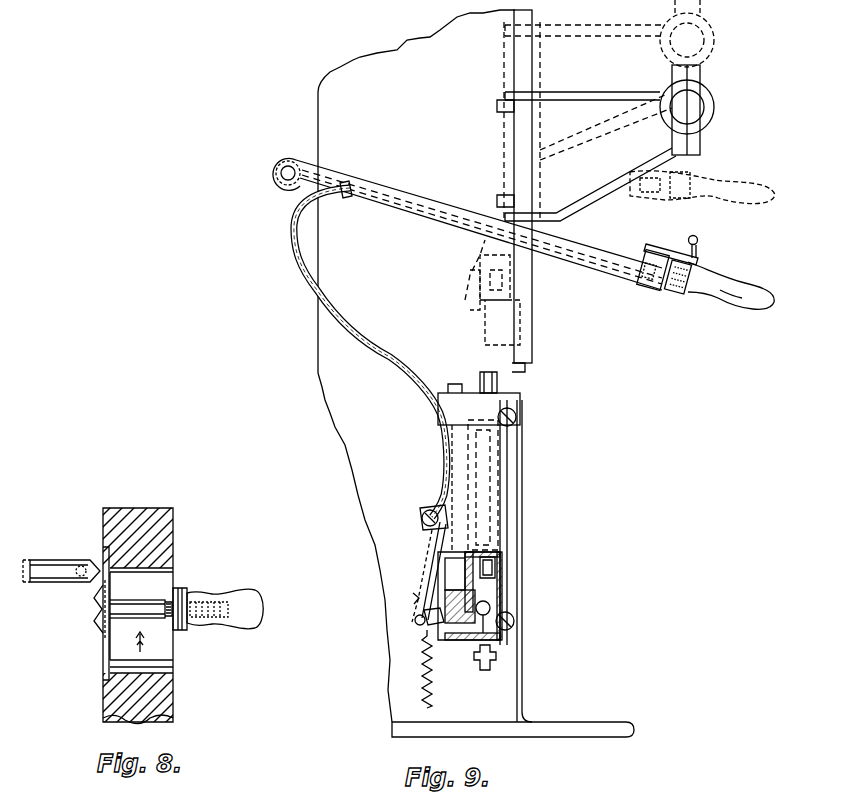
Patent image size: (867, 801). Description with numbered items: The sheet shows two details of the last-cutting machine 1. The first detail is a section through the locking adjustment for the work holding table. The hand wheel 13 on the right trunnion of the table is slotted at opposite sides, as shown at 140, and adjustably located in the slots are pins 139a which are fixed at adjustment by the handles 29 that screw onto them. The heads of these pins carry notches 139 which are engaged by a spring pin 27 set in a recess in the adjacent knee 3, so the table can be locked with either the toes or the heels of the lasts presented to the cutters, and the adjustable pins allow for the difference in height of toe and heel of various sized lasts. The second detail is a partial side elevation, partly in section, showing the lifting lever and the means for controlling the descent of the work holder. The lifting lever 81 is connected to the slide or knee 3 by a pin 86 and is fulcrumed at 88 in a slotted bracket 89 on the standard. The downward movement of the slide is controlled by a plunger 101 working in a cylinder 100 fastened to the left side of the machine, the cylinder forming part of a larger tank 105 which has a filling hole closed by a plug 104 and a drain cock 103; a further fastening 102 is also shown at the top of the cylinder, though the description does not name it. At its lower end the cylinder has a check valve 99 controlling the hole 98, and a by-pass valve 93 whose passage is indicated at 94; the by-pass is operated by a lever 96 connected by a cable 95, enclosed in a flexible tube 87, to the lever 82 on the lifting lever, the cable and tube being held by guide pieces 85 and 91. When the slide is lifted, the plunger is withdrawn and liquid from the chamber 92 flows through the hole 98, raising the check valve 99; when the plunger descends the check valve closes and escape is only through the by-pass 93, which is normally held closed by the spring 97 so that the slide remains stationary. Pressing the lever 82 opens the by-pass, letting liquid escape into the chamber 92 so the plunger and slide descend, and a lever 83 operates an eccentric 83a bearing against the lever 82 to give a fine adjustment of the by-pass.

In FIG. 9, the machine body 1 is at (332, 372).
In FIG. 9, the slide or knee 3 is at (575, 112).
In FIG. 8, the hand wheel 13 is at (170, 536).
In FIG. 8, the spring pin 27 is at (92, 562).
In FIG. 8, the handles 29 is at (228, 624).
In FIG. 9, the lifting lever 81 is at (745, 310).
In FIG. 9, the lever 82 is at (700, 294).
In FIG. 9, the lever 83 is at (700, 240).
In FIG. 9, the eccentric 83a is at (652, 254).
In FIG. 9, the guide piece 85 is at (645, 275).
In FIG. 9, the pin 86 is at (540, 258).
In FIG. 9, the flexible tube 87 is at (470, 230).
In FIG. 9, the fulcrum 88 is at (280, 182).
In FIG. 9, the slotted bracket 89 is at (272, 160).
In FIG. 9, the guide piece 91 is at (420, 530).
In FIG. 9, the chamber 92 is at (450, 563).
In FIG. 9, the by-pass valve 93 is at (455, 575).
In FIG. 9, the passage 94 is at (413, 598).
In FIG. 9, the cable 95 is at (424, 612).
In FIG. 9, the lever 96 is at (415, 625).
In FIG. 9, the spring 97 is at (425, 668).
In FIG. 9, the hole 98 is at (478, 640).
In FIG. 9, the check valve 99 is at (514, 615).
In FIG. 9, the cylinder 100 is at (478, 600).
In FIG. 9, the plunger 101 is at (495, 383).
In FIG. 9, the screw 102 is at (517, 410).
In FIG. 9, the drain cock 103 is at (497, 664).
In FIG. 9, the plug 104 is at (455, 388).
In FIG. 9, the tank 105 is at (505, 498).
In FIG. 8, the notches 139 is at (97, 609).
In FIG. 8, the pins 139a is at (135, 613).
In FIG. 8, the slots 140 is at (160, 645).